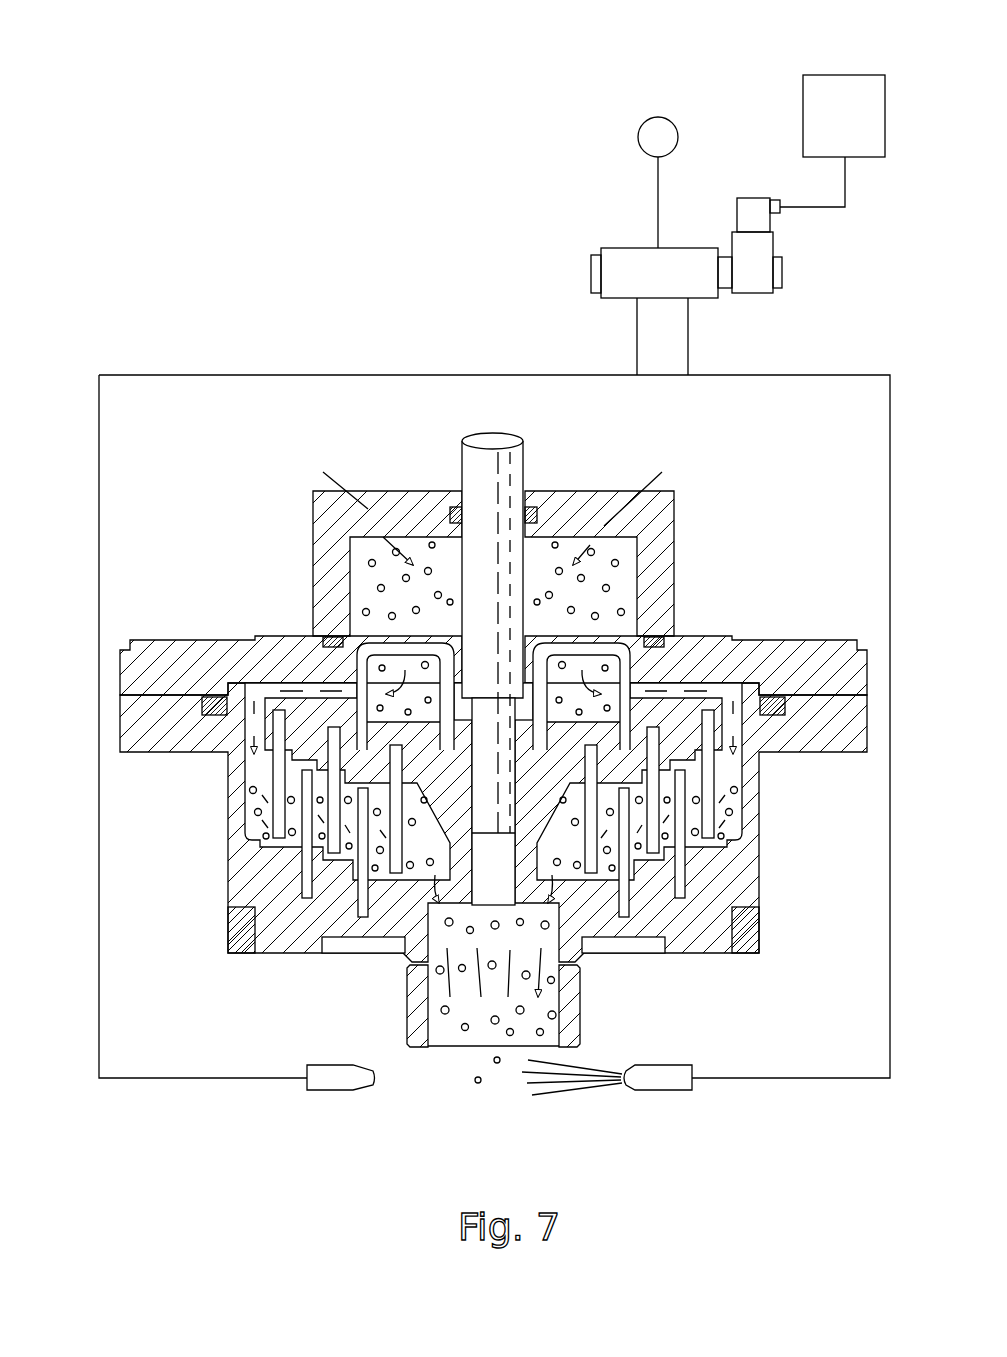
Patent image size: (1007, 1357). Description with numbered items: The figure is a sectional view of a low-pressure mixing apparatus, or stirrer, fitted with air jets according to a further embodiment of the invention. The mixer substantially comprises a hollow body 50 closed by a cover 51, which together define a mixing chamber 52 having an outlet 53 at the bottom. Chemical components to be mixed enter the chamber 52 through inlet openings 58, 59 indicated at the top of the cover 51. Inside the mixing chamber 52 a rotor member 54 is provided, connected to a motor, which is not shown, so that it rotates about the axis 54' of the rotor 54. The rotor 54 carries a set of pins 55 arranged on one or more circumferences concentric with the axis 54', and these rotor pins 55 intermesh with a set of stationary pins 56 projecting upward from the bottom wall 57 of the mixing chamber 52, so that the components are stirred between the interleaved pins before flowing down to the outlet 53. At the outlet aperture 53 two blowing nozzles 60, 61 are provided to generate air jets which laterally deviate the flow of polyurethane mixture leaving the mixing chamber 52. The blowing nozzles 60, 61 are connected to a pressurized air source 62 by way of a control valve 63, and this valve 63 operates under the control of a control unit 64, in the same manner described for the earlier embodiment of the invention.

The hollow body 50 is at (228, 838).
The cover 51 is at (288, 662).
The mixing chamber 52 is at (737, 803).
The outlet 53 is at (412, 995).
The rotor member 54 is at (558, 669).
The axis of the rotor 54' is at (465, 650).
The rotor pins 55 is at (278, 758).
The bottom-wall pins 56 is at (303, 858).
The bottom wall 57 is at (298, 940).
The inlet opening 58 is at (367, 508).
The inlet opening 59 is at (638, 500).
The blowing nozzle 60 is at (328, 1087).
The blowing nozzle 61 is at (670, 1087).
The pressurized air source 62 is at (657, 133).
The control valve 63 is at (618, 265).
The control unit 64 is at (837, 92).